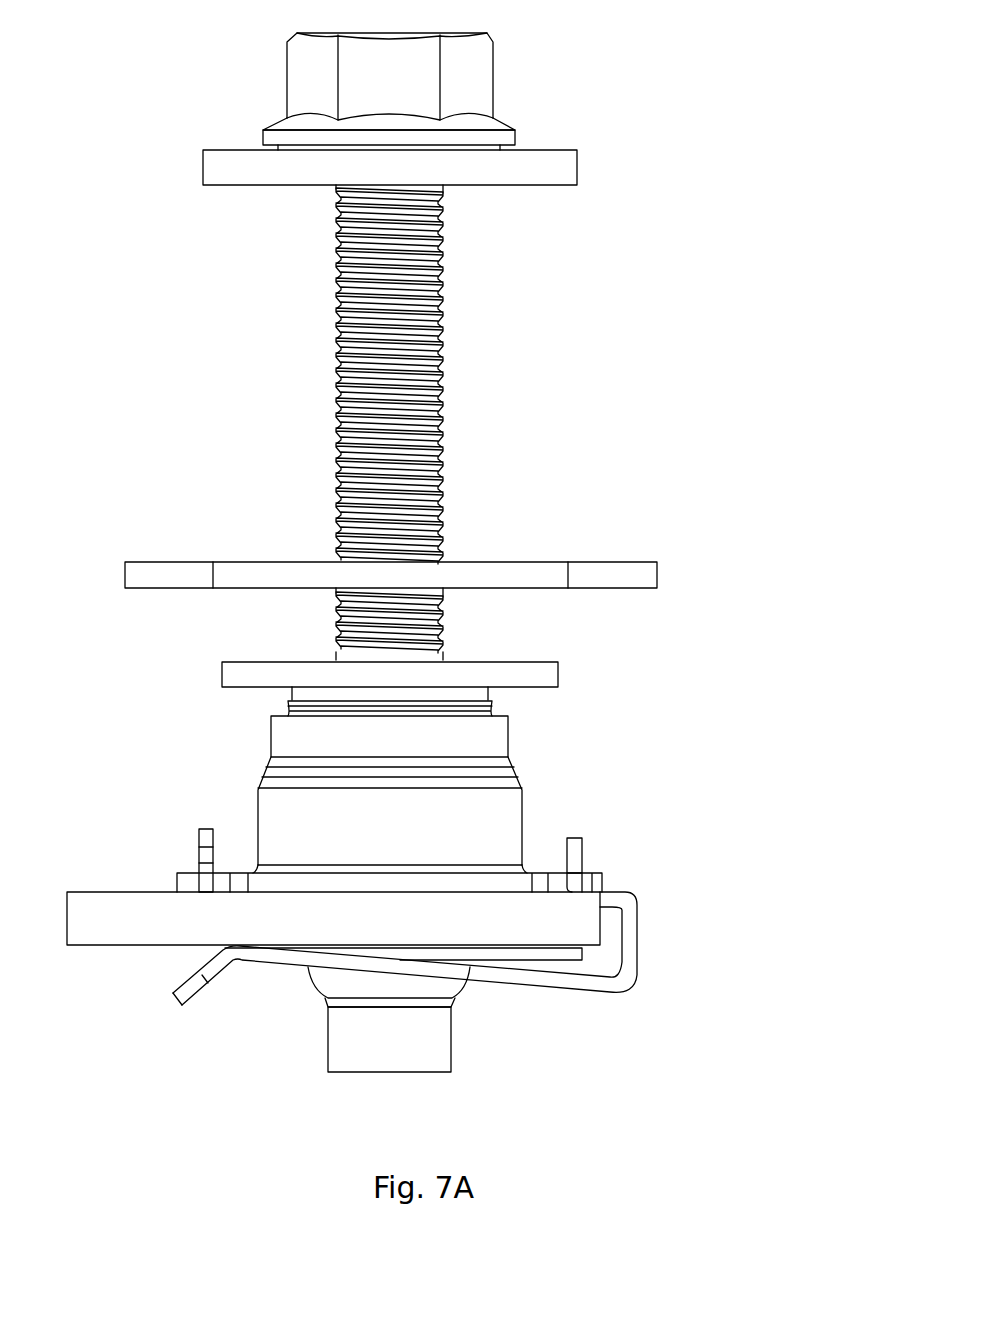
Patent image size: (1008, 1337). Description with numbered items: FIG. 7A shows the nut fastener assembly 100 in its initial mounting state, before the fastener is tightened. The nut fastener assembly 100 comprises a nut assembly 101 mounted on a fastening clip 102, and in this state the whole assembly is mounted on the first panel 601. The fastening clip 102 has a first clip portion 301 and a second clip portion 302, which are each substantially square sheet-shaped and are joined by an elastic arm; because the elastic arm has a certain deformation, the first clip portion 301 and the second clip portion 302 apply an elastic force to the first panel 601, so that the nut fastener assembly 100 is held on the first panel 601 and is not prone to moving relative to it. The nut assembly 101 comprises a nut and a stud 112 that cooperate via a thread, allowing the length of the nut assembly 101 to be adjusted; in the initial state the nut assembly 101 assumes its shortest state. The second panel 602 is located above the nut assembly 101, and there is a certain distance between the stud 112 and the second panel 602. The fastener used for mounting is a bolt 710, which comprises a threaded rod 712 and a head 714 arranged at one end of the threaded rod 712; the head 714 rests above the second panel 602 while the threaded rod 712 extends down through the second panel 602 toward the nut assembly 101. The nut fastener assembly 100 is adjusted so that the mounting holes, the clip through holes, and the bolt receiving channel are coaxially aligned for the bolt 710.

The nut fastener assembly 100 is at (725, 738).
The nut assembly 101 is at (487, 832).
The fastening clip 102 is at (575, 860).
The stud 112 is at (538, 675).
The first clip portion 301 is at (205, 887).
The second clip portion 302 is at (308, 948).
The first panel 601 is at (232, 919).
The second panel 602 is at (243, 570).
The bolt 710 is at (478, 346).
The threaded rod 712 is at (430, 530).
The head 714 is at (553, 168).